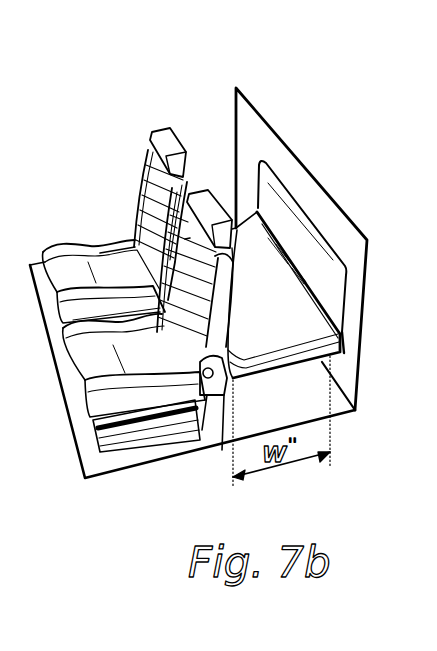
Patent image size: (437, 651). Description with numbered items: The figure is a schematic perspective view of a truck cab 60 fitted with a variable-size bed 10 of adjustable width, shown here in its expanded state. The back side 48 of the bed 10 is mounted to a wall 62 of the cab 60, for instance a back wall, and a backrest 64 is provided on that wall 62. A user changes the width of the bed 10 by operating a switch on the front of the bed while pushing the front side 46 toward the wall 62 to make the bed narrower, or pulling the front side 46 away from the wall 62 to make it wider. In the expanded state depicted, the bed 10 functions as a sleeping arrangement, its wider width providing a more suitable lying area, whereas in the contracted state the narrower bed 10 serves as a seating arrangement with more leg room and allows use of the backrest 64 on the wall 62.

The truck cab 60 is at (138, 102).
The wall 62 is at (300, 177).
The backrest 64 is at (307, 247).
The variable-size bed 10 is at (344, 358).
The back side 48 is at (347, 341).
The front side 46 is at (202, 430).